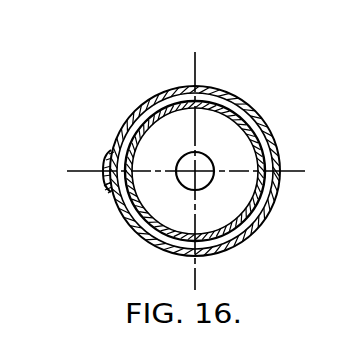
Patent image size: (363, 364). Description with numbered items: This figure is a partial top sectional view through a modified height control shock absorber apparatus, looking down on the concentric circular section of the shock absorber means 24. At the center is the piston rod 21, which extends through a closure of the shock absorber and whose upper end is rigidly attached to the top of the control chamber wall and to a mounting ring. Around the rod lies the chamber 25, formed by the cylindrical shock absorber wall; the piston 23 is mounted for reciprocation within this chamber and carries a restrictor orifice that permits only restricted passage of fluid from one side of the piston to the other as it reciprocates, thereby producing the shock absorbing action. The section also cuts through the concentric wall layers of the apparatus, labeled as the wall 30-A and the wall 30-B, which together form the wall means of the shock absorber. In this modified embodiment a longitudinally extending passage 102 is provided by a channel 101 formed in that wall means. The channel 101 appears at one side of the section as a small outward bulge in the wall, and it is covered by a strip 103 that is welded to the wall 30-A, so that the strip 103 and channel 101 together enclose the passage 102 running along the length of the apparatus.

The piston rod 21 is at (207, 165).
The piston 23 is at (238, 226).
The shock absorber means 24 is at (250, 93).
The chamber 25 is at (178, 211).
The wall 30-A is at (155, 97).
The inner sleeve 30-B is at (262, 198).
The channel 101 is at (124, 168).
The longitudinally extending passage 102 is at (103, 163).
The strip 103 is at (103, 187).